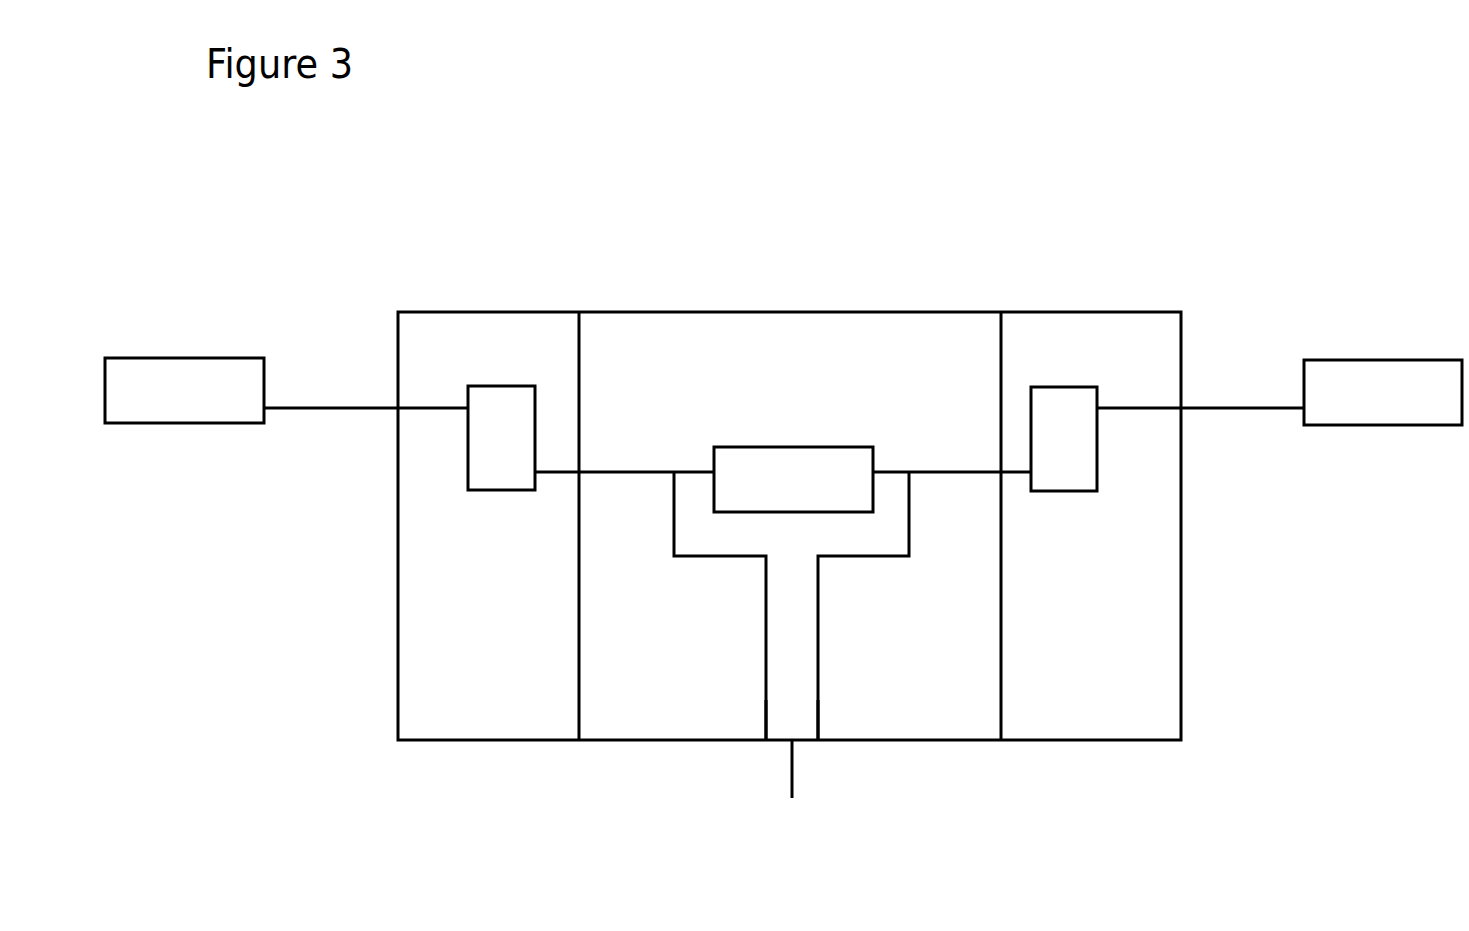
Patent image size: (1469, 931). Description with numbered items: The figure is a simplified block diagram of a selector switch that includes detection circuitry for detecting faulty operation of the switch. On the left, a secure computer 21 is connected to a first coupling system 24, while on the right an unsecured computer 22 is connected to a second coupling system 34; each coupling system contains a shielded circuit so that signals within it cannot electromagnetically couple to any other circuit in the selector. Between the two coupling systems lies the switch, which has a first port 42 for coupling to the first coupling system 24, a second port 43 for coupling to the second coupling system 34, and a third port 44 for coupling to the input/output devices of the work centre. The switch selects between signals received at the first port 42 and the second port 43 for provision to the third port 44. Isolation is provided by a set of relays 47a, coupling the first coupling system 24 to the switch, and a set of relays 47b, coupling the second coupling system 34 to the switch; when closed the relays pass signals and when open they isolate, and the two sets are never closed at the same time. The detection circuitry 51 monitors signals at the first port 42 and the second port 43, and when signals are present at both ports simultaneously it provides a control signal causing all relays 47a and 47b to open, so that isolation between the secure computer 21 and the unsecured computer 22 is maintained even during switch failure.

The secure computer 21 is at (188, 424).
The unsecured computer 22 is at (1398, 426).
The first coupling system 24 is at (490, 741).
The second coupling system 34 is at (1102, 741).
The first port 42 is at (763, 742).
The second port 43 is at (821, 742).
The third port 44 is at (793, 782).
The set of relays 47a is at (504, 386).
The set of relays 47b is at (1062, 386).
The detection circuitry 51 is at (795, 447).